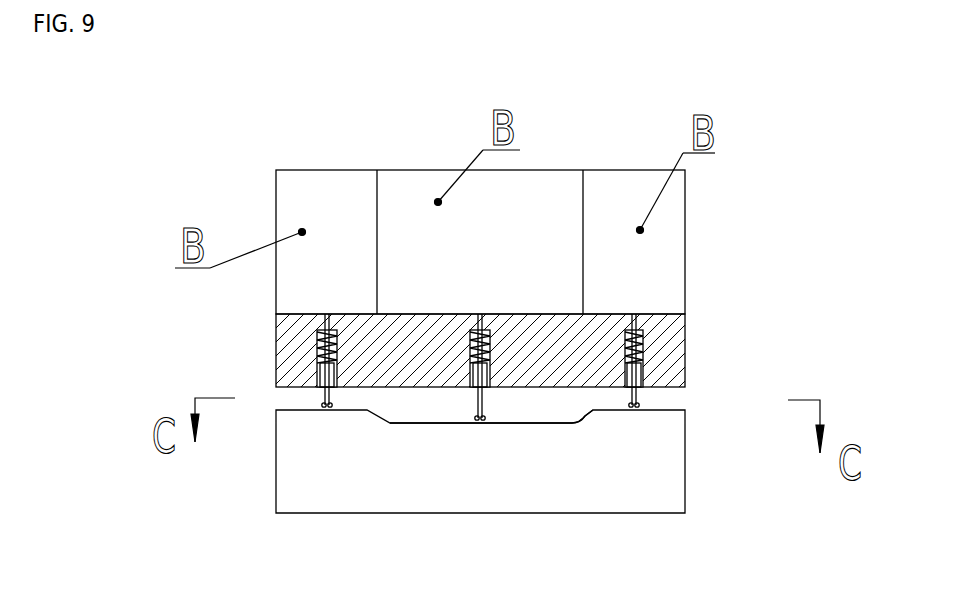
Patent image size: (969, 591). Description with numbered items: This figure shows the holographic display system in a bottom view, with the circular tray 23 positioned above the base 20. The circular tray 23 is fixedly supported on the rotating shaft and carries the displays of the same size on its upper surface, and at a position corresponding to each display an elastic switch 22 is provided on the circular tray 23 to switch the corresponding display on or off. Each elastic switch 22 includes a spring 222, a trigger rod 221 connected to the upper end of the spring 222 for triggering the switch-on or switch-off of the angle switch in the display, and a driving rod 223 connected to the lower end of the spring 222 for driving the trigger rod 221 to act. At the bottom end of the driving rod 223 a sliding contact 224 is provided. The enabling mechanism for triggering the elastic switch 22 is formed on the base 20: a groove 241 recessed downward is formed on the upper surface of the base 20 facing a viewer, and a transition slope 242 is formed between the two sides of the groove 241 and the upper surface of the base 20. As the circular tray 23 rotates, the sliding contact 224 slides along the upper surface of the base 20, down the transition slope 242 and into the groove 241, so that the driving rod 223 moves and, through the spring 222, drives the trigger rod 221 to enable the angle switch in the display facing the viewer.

The base 20 is at (297, 485).
The elastic switch 22 is at (339, 387).
The circular tray 23 is at (296, 319).
The trigger rod 221 is at (635, 318).
The spring 222 is at (635, 344).
The driving rod 223 is at (638, 382).
The sliding contact 224 is at (641, 405).
The groove 241 is at (500, 423).
The transition slope 242 is at (582, 418).